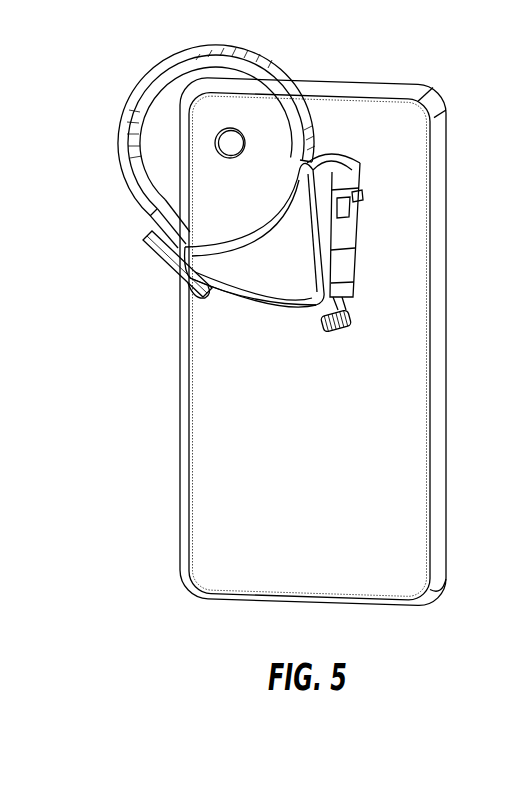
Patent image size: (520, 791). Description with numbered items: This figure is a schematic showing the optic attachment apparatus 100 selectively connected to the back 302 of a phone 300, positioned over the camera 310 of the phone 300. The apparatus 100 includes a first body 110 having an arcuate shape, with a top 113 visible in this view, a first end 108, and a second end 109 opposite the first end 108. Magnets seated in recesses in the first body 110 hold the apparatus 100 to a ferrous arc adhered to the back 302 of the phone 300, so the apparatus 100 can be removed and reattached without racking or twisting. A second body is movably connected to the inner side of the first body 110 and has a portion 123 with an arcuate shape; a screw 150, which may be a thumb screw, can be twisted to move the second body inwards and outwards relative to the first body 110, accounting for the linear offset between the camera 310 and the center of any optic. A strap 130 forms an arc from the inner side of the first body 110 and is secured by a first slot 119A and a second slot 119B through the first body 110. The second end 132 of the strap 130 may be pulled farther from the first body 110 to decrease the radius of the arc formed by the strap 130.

The optic attachment apparatus 100 is at (227, 206).
The first end 108 is at (337, 163).
The second end 109 is at (183, 287).
The first body 110 is at (292, 282).
The top 113 is at (271, 284).
The first slot 119A is at (313, 152).
The second slot 119B is at (156, 239).
The portion of the second body 123 is at (272, 225).
The strap 130 is at (123, 107).
The second end 132 is at (150, 256).
The screw 150 is at (343, 330).
The phone 300 is at (440, 233).
The back 302 is at (326, 482).
The camera 310 is at (236, 146).